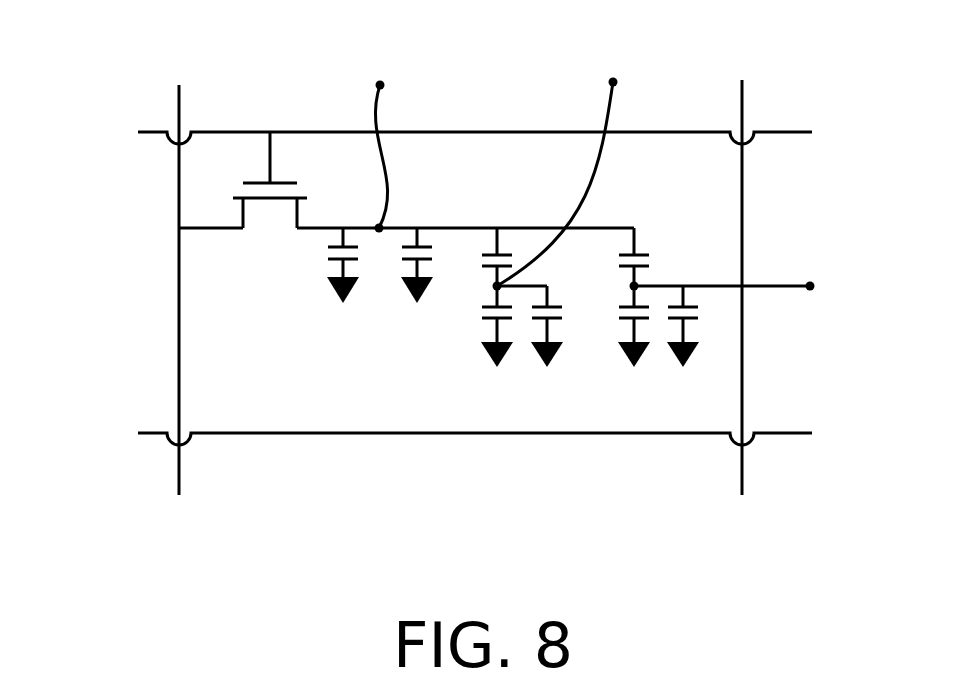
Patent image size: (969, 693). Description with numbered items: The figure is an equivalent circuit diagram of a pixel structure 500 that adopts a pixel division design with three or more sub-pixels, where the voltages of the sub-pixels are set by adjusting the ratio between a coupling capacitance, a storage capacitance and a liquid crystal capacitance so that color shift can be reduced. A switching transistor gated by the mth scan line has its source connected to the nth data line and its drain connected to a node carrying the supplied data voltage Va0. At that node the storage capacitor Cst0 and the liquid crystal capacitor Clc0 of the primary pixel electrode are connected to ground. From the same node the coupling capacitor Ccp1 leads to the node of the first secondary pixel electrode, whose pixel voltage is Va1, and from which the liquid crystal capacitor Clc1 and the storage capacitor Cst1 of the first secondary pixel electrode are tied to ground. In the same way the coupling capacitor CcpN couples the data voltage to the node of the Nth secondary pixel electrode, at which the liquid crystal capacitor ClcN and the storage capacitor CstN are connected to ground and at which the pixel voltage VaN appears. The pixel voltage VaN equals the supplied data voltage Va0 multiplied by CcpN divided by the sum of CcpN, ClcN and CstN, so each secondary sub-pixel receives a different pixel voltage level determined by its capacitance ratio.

The pixel structure 500 is at (473, 286).
The storage capacitor of the primary pixel electrode Cst0 is at (333, 306).
The liquid crystal capacitor of the primary pixel electrode Clc0 is at (408, 306).
The coupling capacitor of the first secondary pixel electrode Ccp1 is at (486, 250).
The liquid crystal capacitor of the first secondary pixel electrode Clc1 is at (487, 371).
The storage capacitor of the first secondary pixel electrode Cst1 is at (545, 371).
The coupling capacitor of the Nth secondary pixel electrode CcpN is at (655, 258).
The liquid crystal capacitor of the Nth secondary pixel electrode ClcN is at (635, 371).
The storage capacitor of the Nth secondary pixel electrode CstN is at (683, 371).
The supplied data voltage Va0 is at (381, 45).
The pixel voltage of the first sub-pixel Va1 is at (615, 45).
The pixel voltage of the Nth sub-pixel VaN is at (850, 287).